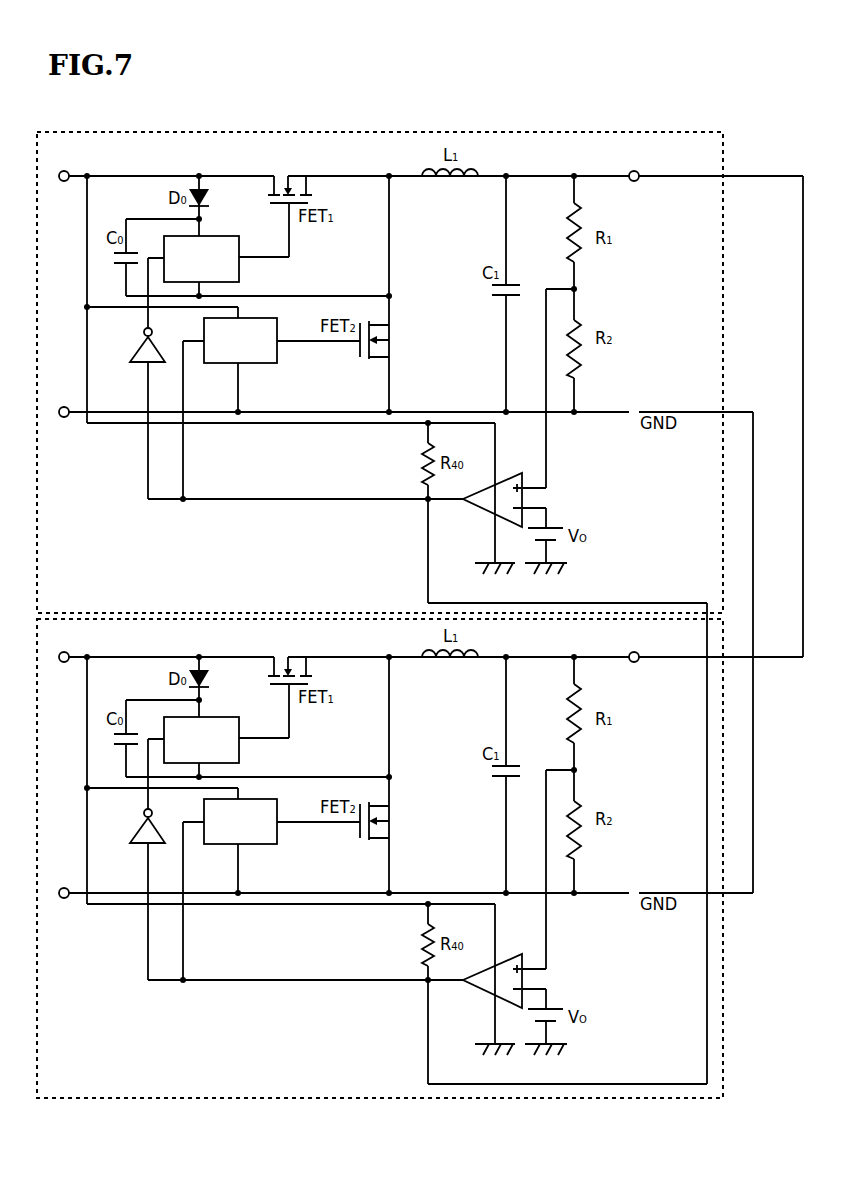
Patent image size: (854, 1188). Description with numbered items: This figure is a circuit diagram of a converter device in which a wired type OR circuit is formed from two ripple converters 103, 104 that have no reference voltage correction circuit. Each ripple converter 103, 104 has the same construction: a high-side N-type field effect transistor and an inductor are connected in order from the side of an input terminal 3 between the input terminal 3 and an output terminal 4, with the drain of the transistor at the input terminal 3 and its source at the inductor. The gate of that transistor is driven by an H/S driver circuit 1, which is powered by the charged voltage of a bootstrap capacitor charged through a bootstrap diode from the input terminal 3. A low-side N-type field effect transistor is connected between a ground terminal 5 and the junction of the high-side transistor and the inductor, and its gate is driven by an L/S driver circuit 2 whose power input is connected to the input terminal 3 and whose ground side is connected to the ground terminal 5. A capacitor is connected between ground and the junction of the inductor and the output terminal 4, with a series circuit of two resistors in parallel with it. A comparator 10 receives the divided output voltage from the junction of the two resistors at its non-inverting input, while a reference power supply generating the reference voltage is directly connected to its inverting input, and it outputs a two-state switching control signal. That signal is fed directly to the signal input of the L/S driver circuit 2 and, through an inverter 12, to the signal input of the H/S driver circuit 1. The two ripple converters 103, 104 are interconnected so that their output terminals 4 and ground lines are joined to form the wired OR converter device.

The H/S driver circuit 1 is at (246, 764).
The L/S driver circuit 2 is at (205, 848).
The input terminal 3 is at (73, 641).
The output terminal 4 is at (643, 641).
The ground terminal 5 is at (53, 913).
The comparator 10 is at (488, 993).
The inverter 12 is at (142, 846).
The ripple converter 103 is at (628, 133).
The ripple converter 104 is at (628, 1098).